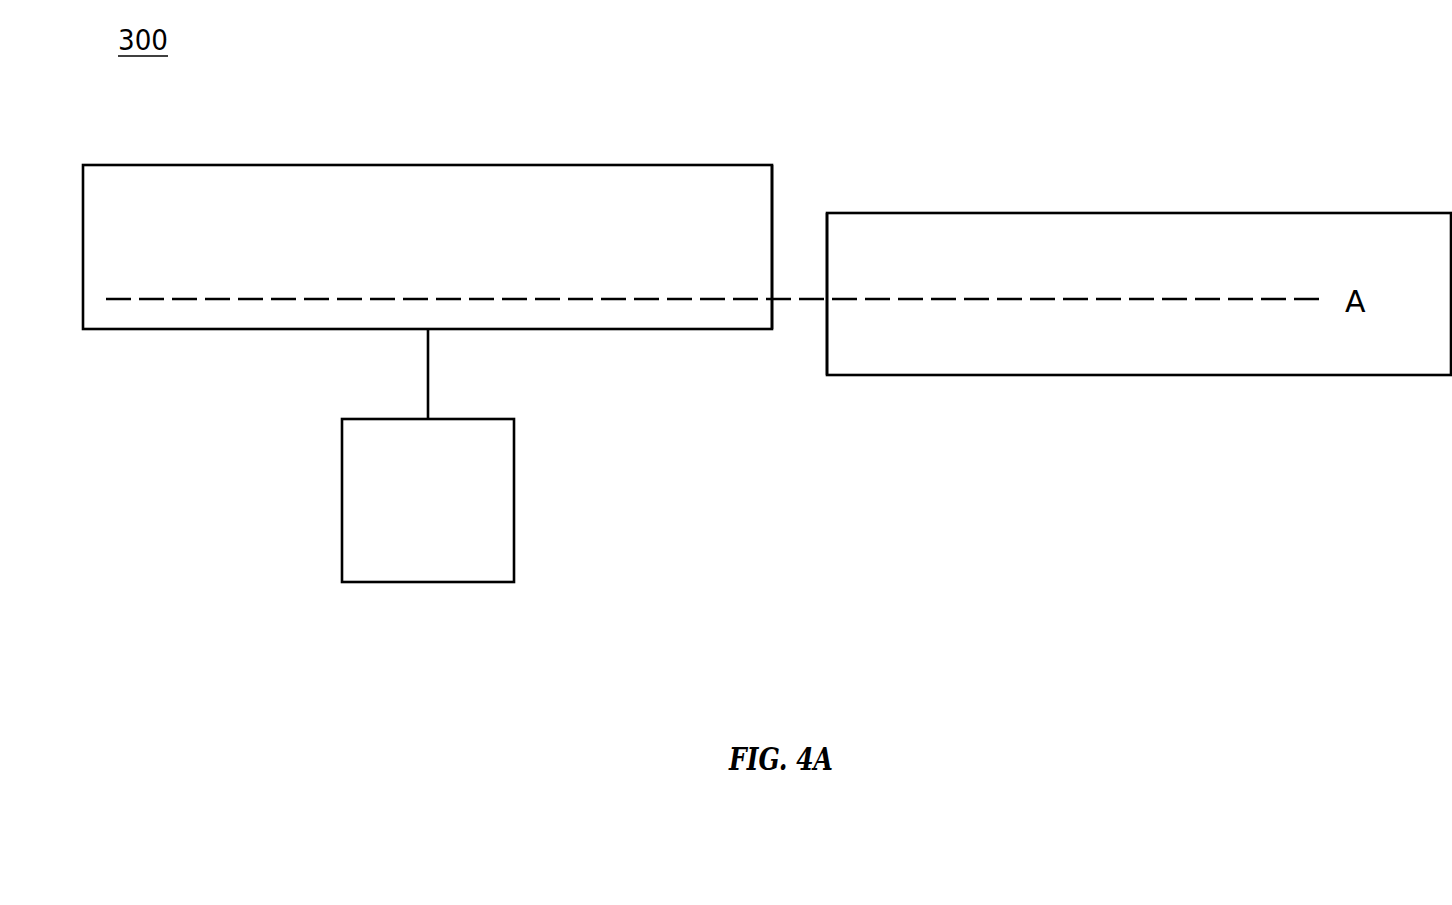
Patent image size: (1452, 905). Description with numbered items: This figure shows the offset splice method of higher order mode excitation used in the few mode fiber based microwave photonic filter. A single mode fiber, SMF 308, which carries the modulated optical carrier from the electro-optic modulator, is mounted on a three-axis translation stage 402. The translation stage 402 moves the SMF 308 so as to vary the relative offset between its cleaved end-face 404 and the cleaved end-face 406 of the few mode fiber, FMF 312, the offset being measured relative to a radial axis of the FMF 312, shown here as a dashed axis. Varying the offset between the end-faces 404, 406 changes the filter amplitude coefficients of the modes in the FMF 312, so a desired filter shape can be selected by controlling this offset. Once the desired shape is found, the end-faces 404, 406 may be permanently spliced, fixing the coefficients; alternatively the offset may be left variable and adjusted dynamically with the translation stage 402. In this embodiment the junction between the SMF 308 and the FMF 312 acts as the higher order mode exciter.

The single mode fiber 308 is at (405, 157).
The few mode fiber 312 is at (1066, 197).
The 3-axis translation stage 402 is at (428, 588).
The cleaved end-face of the SMF 404 is at (774, 249).
The cleaved end-face of the FMF 406 is at (824, 342).